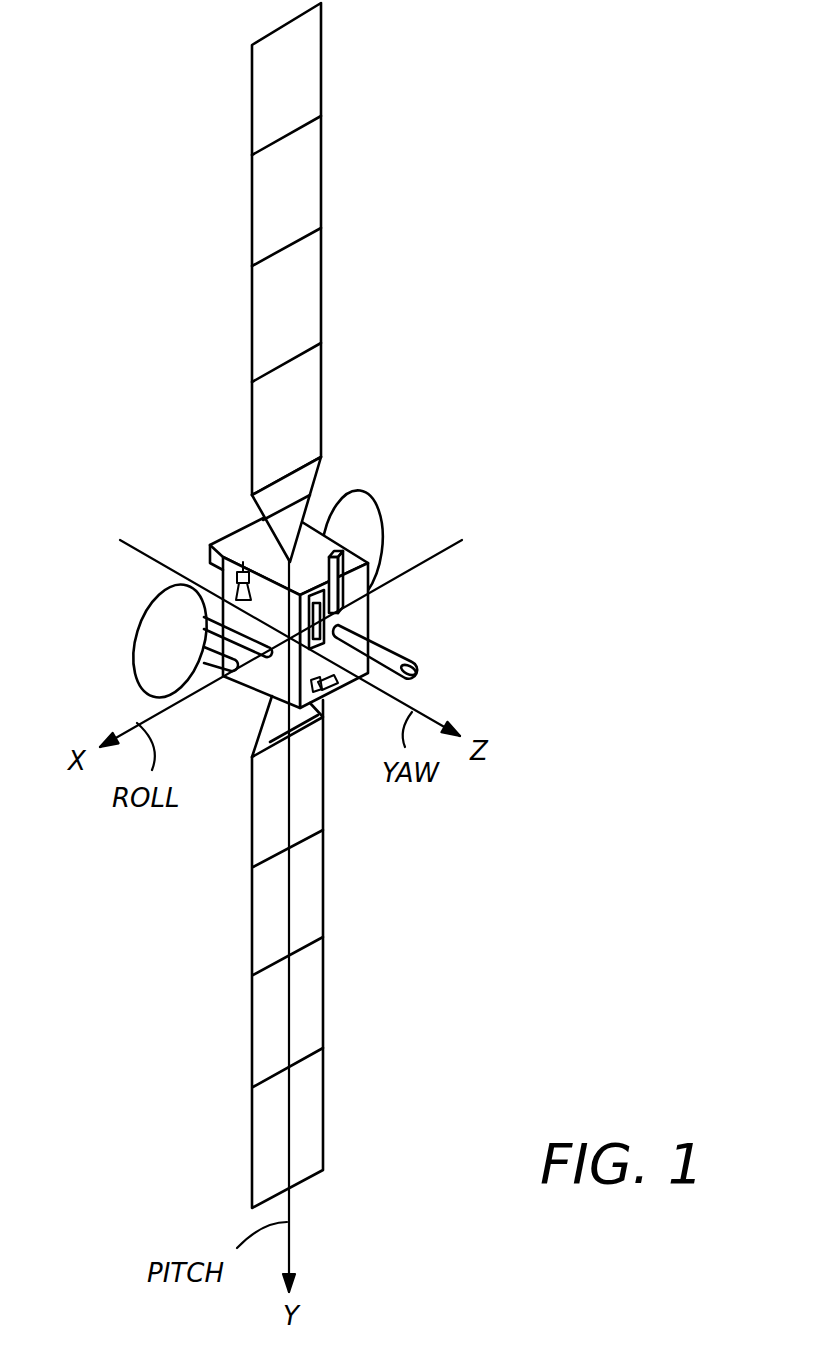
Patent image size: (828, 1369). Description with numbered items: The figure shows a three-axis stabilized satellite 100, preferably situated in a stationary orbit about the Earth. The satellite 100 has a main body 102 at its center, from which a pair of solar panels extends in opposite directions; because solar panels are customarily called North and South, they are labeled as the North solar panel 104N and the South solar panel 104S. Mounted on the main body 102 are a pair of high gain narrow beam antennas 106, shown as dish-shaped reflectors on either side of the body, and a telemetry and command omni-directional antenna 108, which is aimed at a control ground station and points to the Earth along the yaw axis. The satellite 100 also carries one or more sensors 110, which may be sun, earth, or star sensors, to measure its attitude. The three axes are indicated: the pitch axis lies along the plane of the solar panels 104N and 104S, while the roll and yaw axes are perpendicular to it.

The satellite 100 is at (292, 605).
The main body 102 is at (360, 613).
The North solar panel 104N is at (302, 183).
The South solar panel 104S is at (315, 995).
The high gain narrow beam antenna 106 is at (368, 497).
The telemetry and command omni-directional antenna 108 is at (395, 655).
The sensor 110 is at (241, 540).